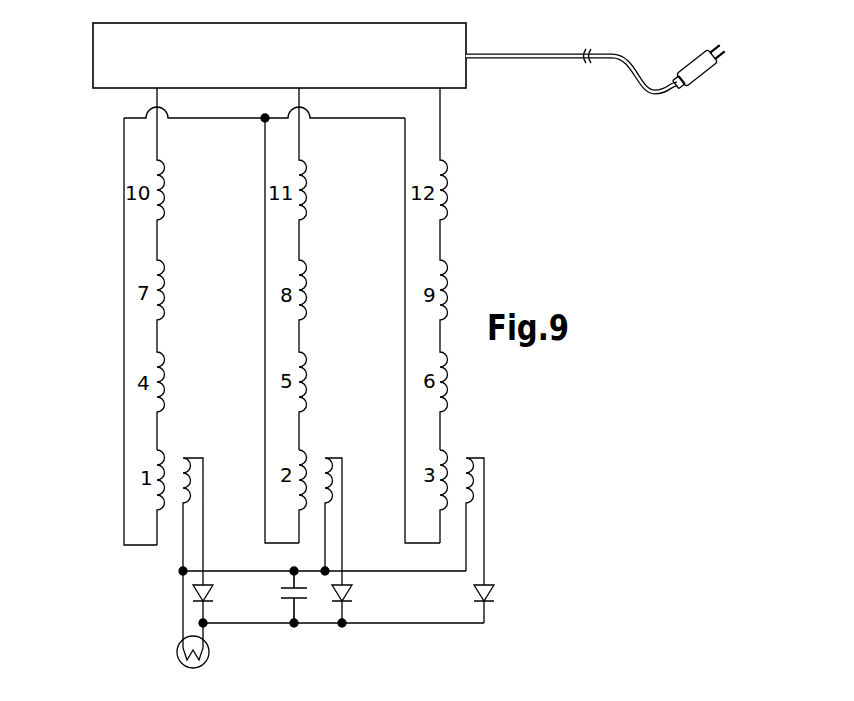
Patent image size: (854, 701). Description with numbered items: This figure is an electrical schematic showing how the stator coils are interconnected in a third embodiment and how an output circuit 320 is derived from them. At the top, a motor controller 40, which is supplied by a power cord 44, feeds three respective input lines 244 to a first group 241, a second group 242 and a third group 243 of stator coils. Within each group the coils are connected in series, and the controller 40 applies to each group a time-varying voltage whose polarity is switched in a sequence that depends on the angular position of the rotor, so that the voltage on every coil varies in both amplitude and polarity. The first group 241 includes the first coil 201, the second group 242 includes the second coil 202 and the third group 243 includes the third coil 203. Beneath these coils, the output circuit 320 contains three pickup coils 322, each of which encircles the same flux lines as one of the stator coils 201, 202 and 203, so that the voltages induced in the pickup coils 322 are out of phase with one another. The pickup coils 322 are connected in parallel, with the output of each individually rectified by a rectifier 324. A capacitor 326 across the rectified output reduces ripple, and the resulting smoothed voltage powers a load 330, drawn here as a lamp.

The motor controller 40 is at (357, 23).
The power cord with plug 44 is at (508, 58).
The input line 244 is at (153, 97).
The first group 241 is at (170, 155).
The second group 242 is at (311, 155).
The third group 243 is at (453, 155).
The first coil 201 is at (160, 450).
The second coil 202 is at (302, 452).
The third coil 203 is at (442, 452).
The pickup coil 322 is at (182, 457).
The rectifier 324 is at (213, 593).
The capacitor 326 is at (300, 600).
The load 330 is at (177, 652).
The output circuit 320 is at (447, 638).